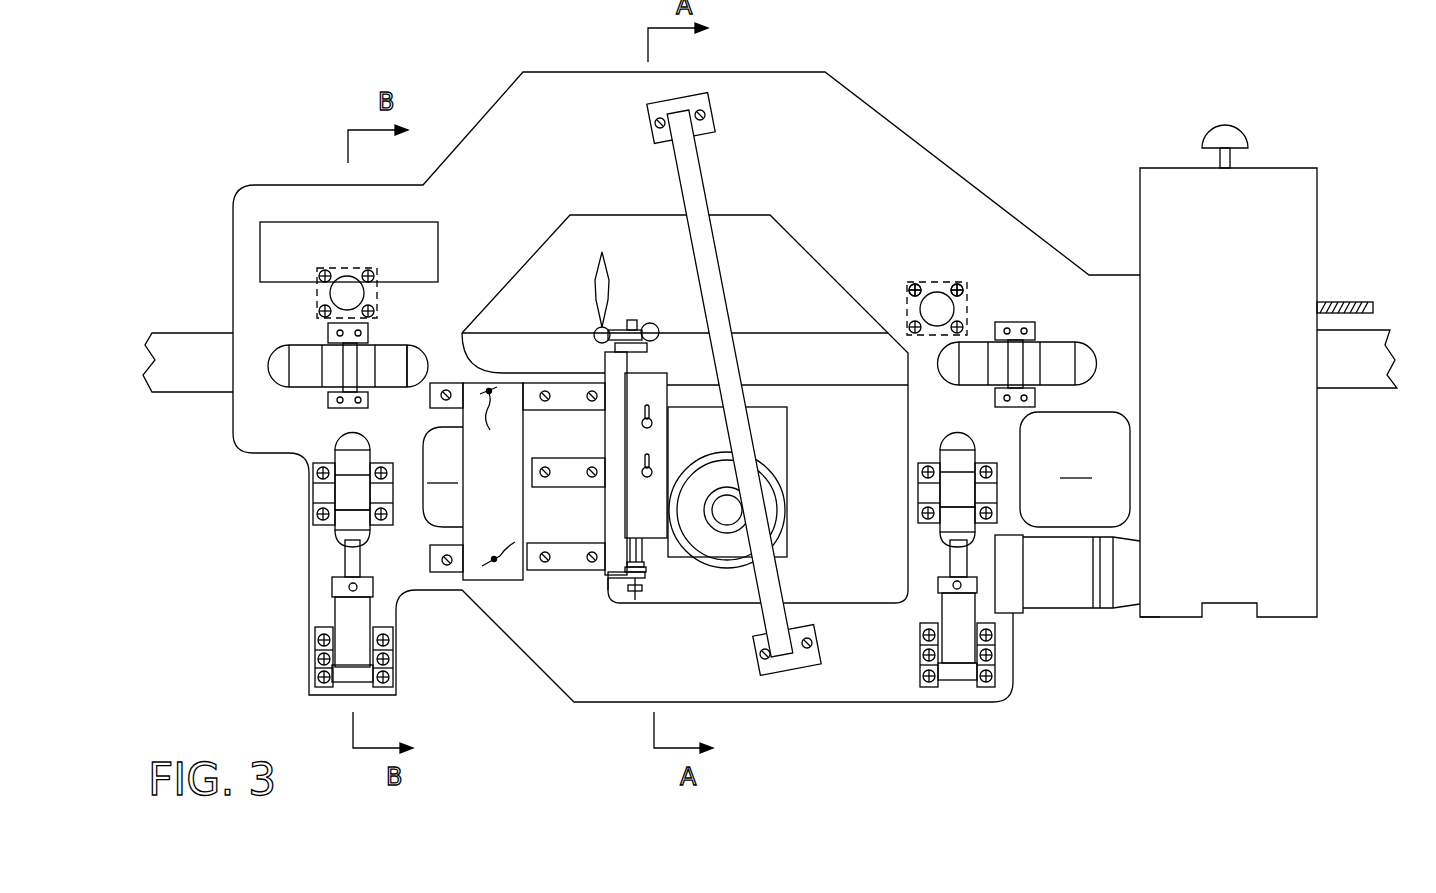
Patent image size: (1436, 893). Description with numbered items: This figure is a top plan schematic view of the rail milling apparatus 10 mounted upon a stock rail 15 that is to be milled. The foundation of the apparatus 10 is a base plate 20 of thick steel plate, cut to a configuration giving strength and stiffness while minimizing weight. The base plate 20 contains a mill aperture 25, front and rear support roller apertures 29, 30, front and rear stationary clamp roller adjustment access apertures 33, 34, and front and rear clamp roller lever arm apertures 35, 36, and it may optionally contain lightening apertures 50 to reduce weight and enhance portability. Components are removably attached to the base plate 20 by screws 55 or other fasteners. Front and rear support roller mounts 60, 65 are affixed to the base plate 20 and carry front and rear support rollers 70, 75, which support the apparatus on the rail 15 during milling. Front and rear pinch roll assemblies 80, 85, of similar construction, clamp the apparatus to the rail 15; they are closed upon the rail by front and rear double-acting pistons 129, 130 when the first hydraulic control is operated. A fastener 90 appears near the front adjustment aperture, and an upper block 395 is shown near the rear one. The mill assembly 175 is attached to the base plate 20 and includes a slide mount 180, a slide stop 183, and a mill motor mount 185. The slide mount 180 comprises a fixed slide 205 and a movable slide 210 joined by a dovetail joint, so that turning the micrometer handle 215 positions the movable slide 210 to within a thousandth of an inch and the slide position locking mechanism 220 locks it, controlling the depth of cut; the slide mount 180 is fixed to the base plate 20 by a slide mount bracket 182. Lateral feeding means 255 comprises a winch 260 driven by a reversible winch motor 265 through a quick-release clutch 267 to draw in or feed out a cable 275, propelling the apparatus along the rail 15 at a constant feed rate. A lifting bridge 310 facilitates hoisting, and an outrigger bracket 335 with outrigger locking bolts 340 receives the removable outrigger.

The apparatus 10 is at (1216, 37).
The rail 15 is at (218, 338).
The base plate 20 is at (940, 180).
The mill aperture 25 is at (820, 318).
The front support roller aperture 29 is at (1083, 366).
The rear support roller aperture 30 is at (420, 368).
The front stationary clamp roller adjustment access aperture 33 is at (937, 308).
The rear stationary clamp roller adjustment access aperture 34 is at (347, 293).
The front clamp roller lever arm aperture 35 is at (965, 445).
The rear clamp roller lever arm aperture 36 is at (340, 442).
The lightening apertures 50 is at (776, 469).
The screws 55 is at (592, 400).
The front support roller mount 60 is at (1024, 322).
The rear support roller mount 65 is at (327, 400).
The front support roller 70 is at (970, 388).
The rear support roller 75 is at (376, 352).
The front pinch roll assembly 80 is at (962, 272).
The rear pinch roll assembly 85 is at (300, 298).
The fastener 90 is at (900, 272).
The front double-acting piston 129 is at (940, 605).
The rear double-acting piston 130 is at (335, 610).
The mill assembly 175 is at (676, 590).
The slide mount 180 is at (628, 298).
The slide mount bracket 182 is at (434, 400).
The slide stop 183 is at (608, 578).
The mill motor mount 185 is at (788, 475).
The fixed slide 205 is at (604, 362).
The movable slide 210 is at (655, 372).
The micrometer handle 215 is at (597, 272).
The slide position locking mechanism 220 is at (656, 470).
The lateral feeding means 255 is at (1142, 640).
The winch 260 is at (1317, 565).
The winch motor 265 is at (1082, 615).
The quick-release clutch 267 is at (1242, 138).
The cable 275 is at (1340, 302).
The lifting bridge 310 is at (705, 173).
The outrigger bracket 335 is at (492, 600).
The outrigger locking bolts 340 is at (520, 545).
The upper block 395 is at (438, 228).